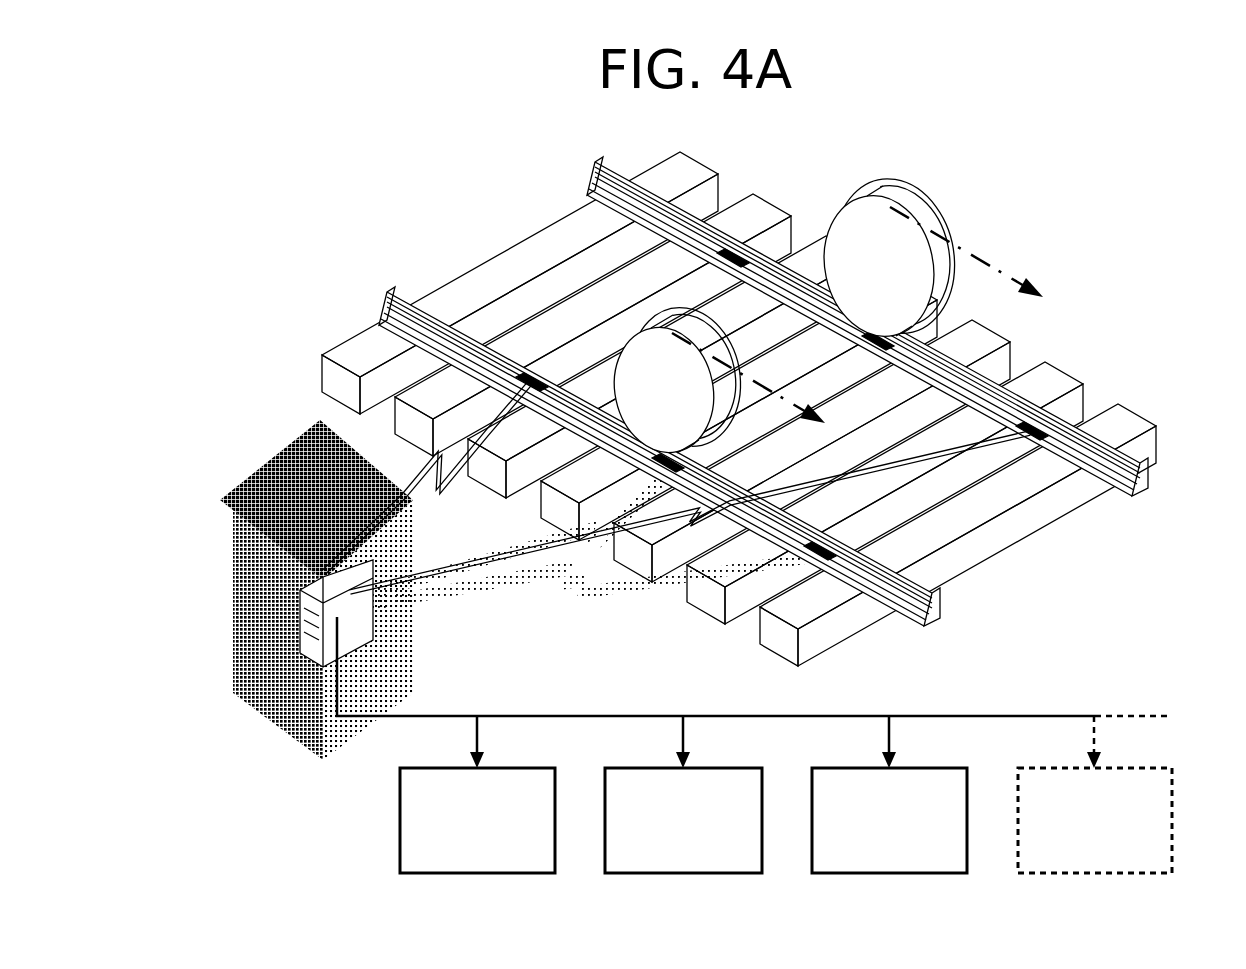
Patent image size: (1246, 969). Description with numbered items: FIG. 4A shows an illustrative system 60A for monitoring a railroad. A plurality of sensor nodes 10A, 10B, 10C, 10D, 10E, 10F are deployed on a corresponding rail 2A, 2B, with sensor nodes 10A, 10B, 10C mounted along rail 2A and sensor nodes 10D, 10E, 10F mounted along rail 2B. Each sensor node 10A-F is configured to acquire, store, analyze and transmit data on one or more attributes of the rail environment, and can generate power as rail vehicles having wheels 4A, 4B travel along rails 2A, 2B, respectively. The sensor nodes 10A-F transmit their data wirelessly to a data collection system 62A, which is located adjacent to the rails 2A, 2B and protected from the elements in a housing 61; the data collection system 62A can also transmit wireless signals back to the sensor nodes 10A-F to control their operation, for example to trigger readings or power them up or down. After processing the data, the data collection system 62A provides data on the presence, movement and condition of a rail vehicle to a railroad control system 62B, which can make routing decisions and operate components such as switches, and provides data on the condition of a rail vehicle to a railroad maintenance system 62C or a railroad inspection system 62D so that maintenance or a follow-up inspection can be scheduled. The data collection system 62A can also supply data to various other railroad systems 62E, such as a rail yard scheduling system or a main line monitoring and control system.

The system for monitoring a railroad 60A is at (272, 237).
The rail 2A is at (1136, 474).
The rail 2B is at (924, 614).
The wheel 4A is at (892, 283).
The wheel 4B is at (676, 413).
The sensor node 10A is at (722, 259).
The sensor node 10B is at (862, 344).
The sensor node 10C is at (1014, 432).
The sensor node 10D is at (548, 376).
The sensor node 10E is at (682, 468).
The sensor node 10F is at (840, 556).
The housing 61 is at (238, 590).
The data collection system 62A is at (372, 626).
The railroad control system 62B is at (477, 820).
The railroad maintenance system 62C is at (683, 820).
The railroad inspection system 62D is at (889, 820).
The other railroad systems 62E is at (1095, 820).